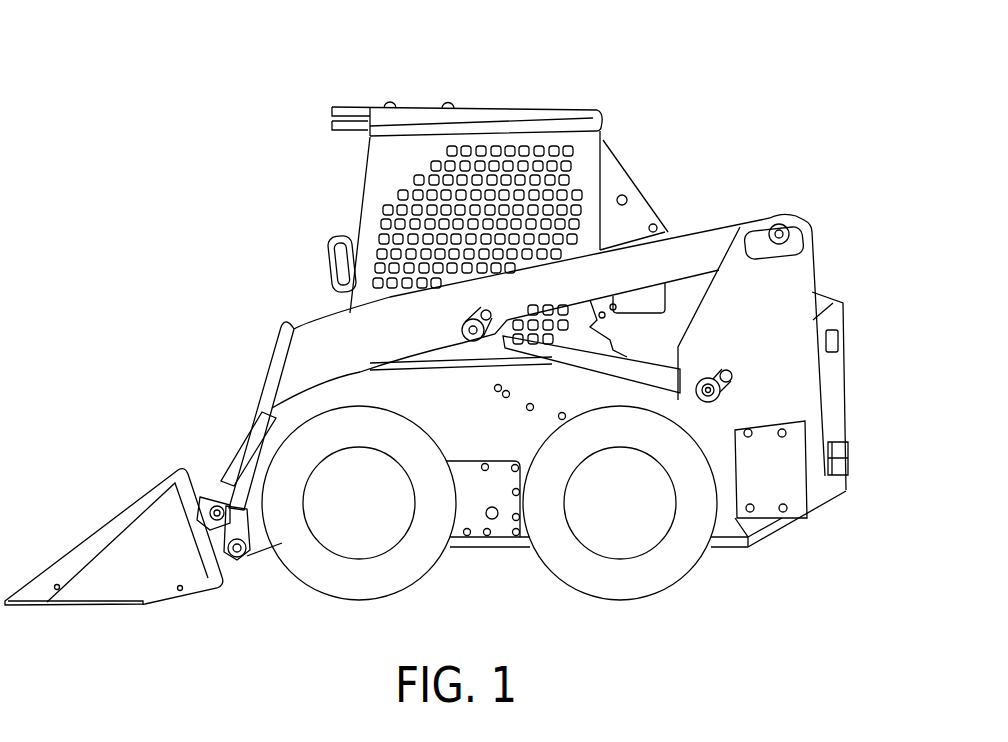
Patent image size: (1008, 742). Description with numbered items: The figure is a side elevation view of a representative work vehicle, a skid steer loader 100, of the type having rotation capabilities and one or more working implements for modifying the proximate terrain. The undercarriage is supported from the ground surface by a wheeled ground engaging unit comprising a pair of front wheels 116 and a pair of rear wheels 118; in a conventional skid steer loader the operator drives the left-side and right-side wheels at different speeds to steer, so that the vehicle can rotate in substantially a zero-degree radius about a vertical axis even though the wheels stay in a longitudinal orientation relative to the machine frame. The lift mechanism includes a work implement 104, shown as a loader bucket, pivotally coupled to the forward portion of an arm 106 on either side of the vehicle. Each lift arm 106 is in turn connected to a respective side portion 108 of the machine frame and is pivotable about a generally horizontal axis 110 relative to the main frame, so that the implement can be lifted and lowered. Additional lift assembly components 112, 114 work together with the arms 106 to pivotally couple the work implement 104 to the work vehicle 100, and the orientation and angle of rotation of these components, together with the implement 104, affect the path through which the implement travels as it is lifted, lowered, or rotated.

The skid steer loader 100 is at (256, 98).
The work implement 104 is at (100, 538).
The arm 106 is at (297, 372).
The side portion of the machine frame 108 is at (793, 273).
The horizontal axis 110 is at (783, 231).
The lift assembly component 112 is at (717, 392).
The lift assembly component 114 is at (642, 374).
The front wheels 116 is at (372, 580).
The rear wheels 118 is at (643, 585).